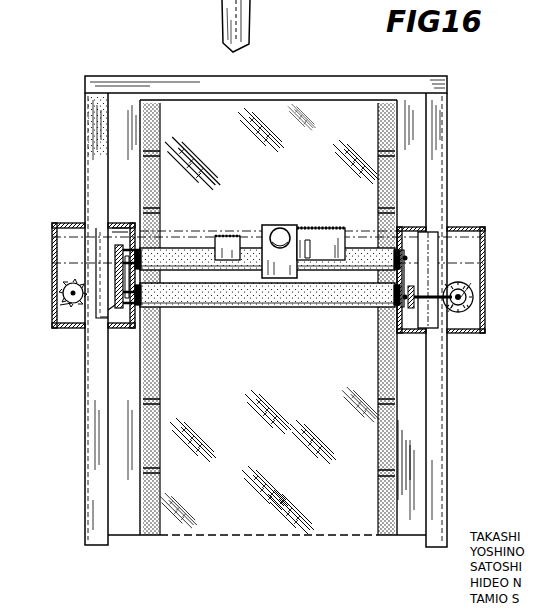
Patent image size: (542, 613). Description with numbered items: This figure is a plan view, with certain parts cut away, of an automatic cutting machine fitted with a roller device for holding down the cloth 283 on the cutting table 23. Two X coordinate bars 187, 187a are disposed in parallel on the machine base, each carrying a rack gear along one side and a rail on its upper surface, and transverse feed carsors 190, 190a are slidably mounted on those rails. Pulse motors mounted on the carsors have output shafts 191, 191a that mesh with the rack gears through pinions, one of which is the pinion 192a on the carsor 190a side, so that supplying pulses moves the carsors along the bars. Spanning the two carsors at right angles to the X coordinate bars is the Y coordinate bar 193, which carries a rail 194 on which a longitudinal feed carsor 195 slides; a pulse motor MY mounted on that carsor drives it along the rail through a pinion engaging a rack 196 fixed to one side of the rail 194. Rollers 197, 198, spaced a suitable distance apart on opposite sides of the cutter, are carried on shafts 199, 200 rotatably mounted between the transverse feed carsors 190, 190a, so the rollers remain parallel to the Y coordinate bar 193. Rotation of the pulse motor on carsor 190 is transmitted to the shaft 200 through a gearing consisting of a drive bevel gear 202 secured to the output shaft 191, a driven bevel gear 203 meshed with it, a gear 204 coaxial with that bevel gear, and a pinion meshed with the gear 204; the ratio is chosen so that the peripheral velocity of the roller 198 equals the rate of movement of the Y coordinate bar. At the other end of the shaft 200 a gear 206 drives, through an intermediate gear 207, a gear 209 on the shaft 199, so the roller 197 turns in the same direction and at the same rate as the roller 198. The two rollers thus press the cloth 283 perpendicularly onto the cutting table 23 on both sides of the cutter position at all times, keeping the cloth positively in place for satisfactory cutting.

The cutting table 23 is at (158, 481).
The X coordinate bar 187 is at (442, 150).
The X coordinate bar 187a is at (87, 114).
The transverse feed carsor 190 is at (482, 233).
The transverse feed carsor 190a is at (70, 223).
The output shaft 191 is at (470, 280).
The output shaft 191a is at (72, 303).
The pinion 192a is at (63, 290).
The Y coordinate bar 193 is at (313, 248).
The rail 194 is at (332, 232).
The longitudinal feed carsor 195 is at (262, 225).
The rack 196 is at (232, 238).
The roller 197 is at (197, 255).
The roller 198 is at (193, 307).
The shaft 199 is at (128, 223).
The shaft 200 is at (440, 312).
The drive bevel gear 202 is at (473, 285).
The driven bevel gear 203 is at (468, 311).
The gear 204 is at (405, 312).
The gear 206 is at (115, 305).
The intermediate gear 207 is at (110, 270).
The gear 209 is at (117, 252).
The cloth 283 is at (368, 441).
The pulse motor MY is at (283, 230).